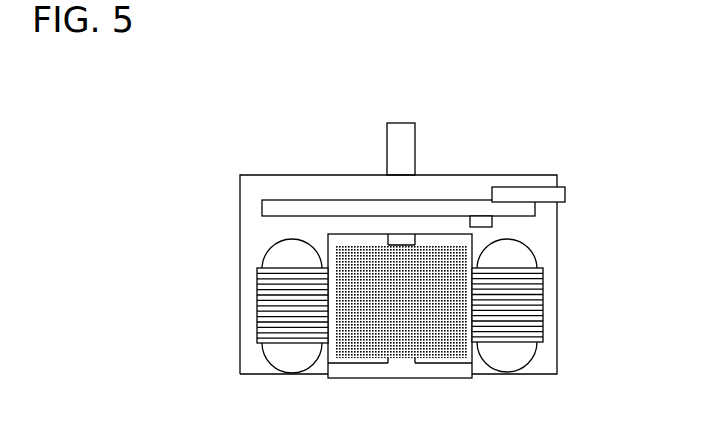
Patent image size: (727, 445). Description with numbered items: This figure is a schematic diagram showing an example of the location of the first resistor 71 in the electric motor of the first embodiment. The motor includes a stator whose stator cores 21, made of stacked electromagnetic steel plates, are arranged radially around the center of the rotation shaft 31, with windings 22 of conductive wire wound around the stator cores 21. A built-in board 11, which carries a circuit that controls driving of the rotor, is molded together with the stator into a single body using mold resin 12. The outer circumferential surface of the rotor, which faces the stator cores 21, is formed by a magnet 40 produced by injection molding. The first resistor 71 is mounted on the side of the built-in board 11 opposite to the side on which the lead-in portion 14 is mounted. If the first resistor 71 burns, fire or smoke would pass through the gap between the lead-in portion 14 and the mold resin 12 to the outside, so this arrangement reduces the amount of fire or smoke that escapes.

The built-in board 11 is at (300, 205).
The mold resin 12 is at (557, 224).
The lead-in portion 14 is at (514, 190).
The stator cores 21 is at (523, 258).
The windings 22 is at (525, 308).
The rotation shaft 31 is at (404, 360).
The magnet 40 is at (430, 350).
The first resistor 71 is at (477, 215).